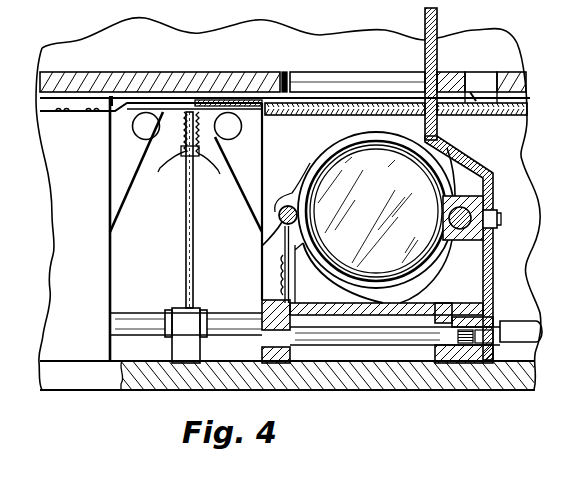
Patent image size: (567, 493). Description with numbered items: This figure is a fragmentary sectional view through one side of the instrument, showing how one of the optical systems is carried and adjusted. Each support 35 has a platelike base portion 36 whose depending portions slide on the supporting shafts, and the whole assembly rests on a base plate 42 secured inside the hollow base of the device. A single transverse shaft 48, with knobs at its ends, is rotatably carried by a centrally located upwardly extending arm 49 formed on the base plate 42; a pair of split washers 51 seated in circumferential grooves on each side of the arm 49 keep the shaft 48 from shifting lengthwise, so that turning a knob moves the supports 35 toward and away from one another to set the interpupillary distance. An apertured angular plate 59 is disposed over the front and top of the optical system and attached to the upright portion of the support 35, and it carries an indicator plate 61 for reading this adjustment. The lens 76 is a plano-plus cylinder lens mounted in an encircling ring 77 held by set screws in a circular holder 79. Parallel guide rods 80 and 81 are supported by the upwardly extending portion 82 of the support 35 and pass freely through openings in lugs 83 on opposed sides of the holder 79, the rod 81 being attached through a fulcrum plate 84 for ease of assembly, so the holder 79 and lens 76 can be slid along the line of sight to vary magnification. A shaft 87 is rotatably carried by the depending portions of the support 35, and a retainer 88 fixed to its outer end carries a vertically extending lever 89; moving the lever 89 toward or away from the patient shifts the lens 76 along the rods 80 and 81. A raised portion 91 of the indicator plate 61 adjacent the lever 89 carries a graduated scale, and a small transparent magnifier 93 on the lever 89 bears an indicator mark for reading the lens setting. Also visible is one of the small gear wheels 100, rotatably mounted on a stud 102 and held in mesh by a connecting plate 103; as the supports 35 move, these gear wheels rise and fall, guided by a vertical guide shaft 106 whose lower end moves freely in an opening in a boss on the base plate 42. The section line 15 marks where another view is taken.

The section line 15 is at (487, 72).
The support 35 is at (498, 301).
The platelike base portion 36 is at (425, 301).
The base plate 42 is at (348, 392).
The shaft 48 is at (218, 333).
The upwardly extending arm 49 is at (200, 308).
The split washer 51 is at (170, 308).
The apertured angular plate 59 is at (472, 119).
The indicator plate 61 is at (515, 104).
The fourth lens 76 is at (328, 178).
The encircling ring 77 is at (385, 153).
The circular holder 79 is at (338, 148).
The guide rod 80 is at (462, 198).
The guide rod 81 is at (264, 245).
The upwardly extending portion 82 is at (296, 278).
The lug 83 is at (286, 205).
The fulcrum plate 84 is at (284, 258).
The shaft 87 is at (412, 340).
The retainer 88 is at (485, 358).
The lever 89 is at (425, 15).
The raised portion 91 is at (476, 95).
The transparent magnifier 93 is at (443, 82).
The small gear wheel 100 is at (168, 170).
The stud 102 is at (140, 137).
The connecting plate 103 is at (127, 198).
The vertical guide shaft 106 is at (185, 243).